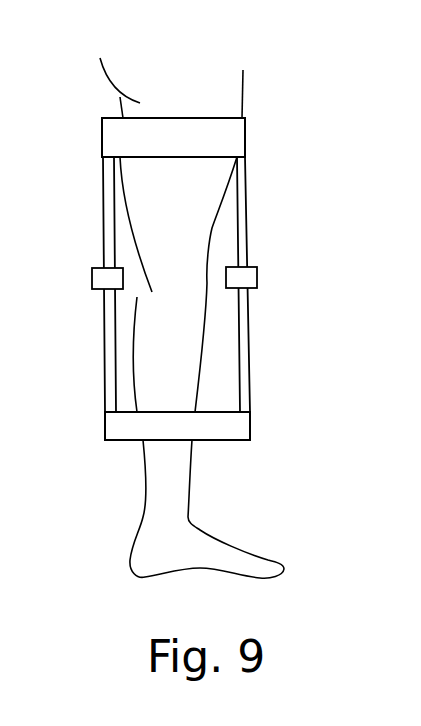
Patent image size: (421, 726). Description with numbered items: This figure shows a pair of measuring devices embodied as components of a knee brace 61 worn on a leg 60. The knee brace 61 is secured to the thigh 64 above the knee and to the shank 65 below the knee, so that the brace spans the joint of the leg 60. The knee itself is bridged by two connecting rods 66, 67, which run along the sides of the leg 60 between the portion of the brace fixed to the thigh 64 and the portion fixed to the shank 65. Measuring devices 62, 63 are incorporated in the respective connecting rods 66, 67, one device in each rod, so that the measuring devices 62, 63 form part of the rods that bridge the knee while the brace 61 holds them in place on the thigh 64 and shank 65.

The leg 60 is at (193, 80).
The knee brace 61 is at (232, 137).
The measuring device 62 is at (97, 284).
The measuring device 63 is at (243, 277).
The thigh 64 is at (232, 103).
The shank 65 is at (177, 478).
The connecting rod 66 is at (112, 365).
The connecting rod 67 is at (243, 215).